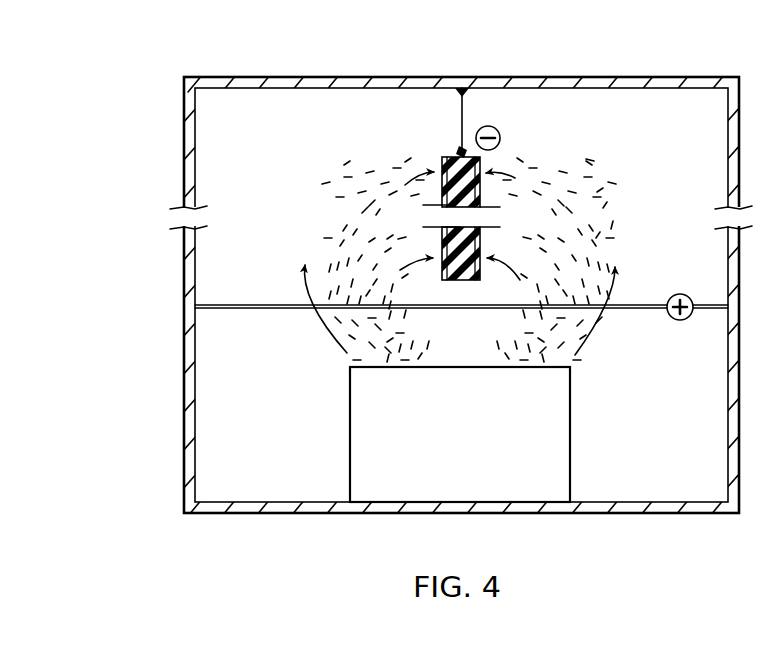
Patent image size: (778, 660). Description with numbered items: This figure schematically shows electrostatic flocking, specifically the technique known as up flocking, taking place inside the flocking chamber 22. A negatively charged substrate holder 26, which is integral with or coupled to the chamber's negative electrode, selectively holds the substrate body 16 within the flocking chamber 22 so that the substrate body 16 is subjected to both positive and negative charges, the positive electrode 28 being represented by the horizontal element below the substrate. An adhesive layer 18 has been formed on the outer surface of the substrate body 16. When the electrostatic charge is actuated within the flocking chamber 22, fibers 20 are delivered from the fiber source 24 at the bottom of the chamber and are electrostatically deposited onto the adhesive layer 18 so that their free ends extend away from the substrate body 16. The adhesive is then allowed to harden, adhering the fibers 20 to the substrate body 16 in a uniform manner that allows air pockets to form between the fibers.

The flocking chamber 22 is at (170, 70).
The substrate body 16 is at (472, 166).
The adhesive layer 18 is at (440, 238).
The fibers 20 is at (597, 222).
The source of flocking fibers 24 is at (472, 449).
The substrate holder 26 is at (462, 118).
The positive electrode 28 is at (280, 306).